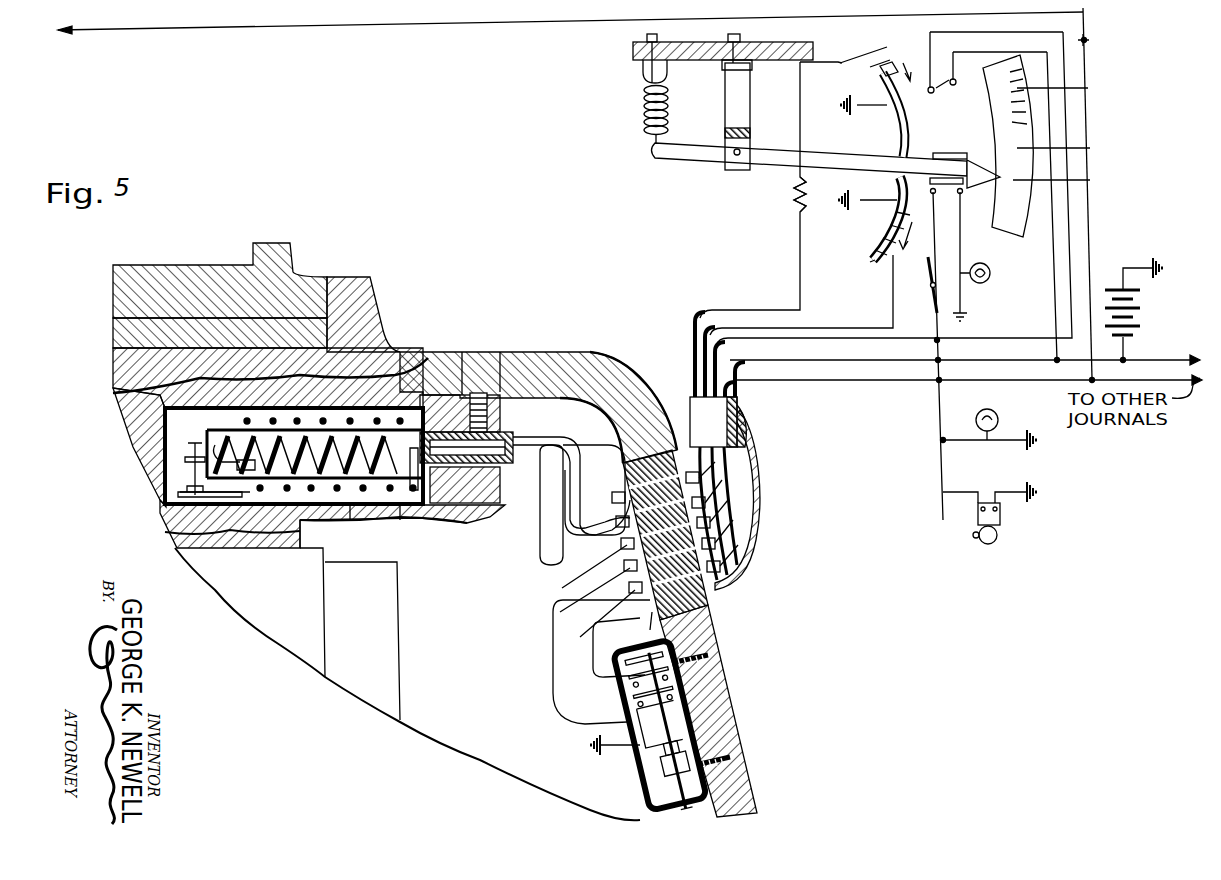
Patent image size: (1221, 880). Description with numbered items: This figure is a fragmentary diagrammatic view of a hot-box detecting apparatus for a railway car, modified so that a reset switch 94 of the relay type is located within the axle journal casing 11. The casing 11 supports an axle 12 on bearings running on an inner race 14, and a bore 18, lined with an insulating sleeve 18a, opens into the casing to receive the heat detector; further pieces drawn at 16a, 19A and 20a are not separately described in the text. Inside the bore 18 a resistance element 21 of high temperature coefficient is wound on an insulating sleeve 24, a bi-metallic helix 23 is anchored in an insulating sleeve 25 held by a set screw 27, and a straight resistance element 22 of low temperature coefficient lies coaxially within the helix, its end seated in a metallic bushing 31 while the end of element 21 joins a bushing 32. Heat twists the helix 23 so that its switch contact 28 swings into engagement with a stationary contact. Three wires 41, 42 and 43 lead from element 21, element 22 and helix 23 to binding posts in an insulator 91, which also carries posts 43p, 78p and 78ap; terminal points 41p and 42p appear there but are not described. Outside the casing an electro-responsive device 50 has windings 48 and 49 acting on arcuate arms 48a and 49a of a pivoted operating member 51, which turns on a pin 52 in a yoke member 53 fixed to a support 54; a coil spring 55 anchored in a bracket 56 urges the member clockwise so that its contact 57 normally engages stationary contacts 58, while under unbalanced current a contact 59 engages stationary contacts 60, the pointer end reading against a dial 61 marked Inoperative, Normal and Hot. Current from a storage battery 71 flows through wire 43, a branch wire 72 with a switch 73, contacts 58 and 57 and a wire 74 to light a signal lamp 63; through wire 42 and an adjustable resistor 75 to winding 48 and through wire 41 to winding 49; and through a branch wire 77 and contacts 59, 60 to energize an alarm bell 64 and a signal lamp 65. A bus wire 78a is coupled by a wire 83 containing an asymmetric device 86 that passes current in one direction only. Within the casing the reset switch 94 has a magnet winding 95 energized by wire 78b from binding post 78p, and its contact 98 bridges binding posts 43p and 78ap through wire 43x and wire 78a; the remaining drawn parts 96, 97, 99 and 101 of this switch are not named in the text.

The axle journal casing 11 is at (431, 352).
The axle 12 is at (383, 637).
The inner race 14 is at (300, 532).
The housing arch 16a is at (633, 373).
The bore 18 is at (143, 483).
The insulating sleeve 18a is at (400, 510).
The bushing 19A is at (473, 510).
The plug 20a is at (500, 402).
The resistance element 21 is at (203, 418).
The resistance element 22 is at (306, 454).
The bi-metallic helix 23 is at (314, 454).
The insulating sleeve 24 is at (349, 520).
The insulating sleeve 25 is at (513, 423).
The set screw 27 is at (497, 365).
The switch contact 28 is at (237, 463).
The metallic bushing 31 is at (189, 466).
The bushing 32 is at (207, 479).
The wire 41 is at (540, 515).
The terminal 41p is at (616, 508).
The wire 42 is at (578, 464).
The terminal 42p is at (618, 490).
The wire 43 is at (562, 445).
The binding post 43p is at (700, 601).
The wire 43x is at (653, 612).
The electromagnetic winding 48 is at (867, 68).
The arcuate arm 48a is at (897, 122).
The electromagnetic winding 49 is at (873, 240).
The arcuate arm 49a is at (903, 193).
The electro-responsive device 50 is at (625, 160).
The operating member 51 is at (812, 153).
The pin 52 is at (750, 143).
The yoke member 53 is at (747, 107).
The stationary support 54 is at (777, 53).
The coil spring 55 is at (667, 107).
The bracket 56 is at (662, 77).
The contact 57 is at (962, 190).
The stationary spaced contacts 58 is at (946, 201).
The contact 59 is at (947, 153).
The stationary spaced contacts 60 is at (995, 74).
The indicating dial 61 is at (1017, 70).
The signal lamp 63 is at (991, 268).
The bell 64 is at (1002, 535).
The signal lamp 65 is at (993, 409).
The storage battery 71 is at (1148, 320).
The branch wire 72 is at (937, 328).
The switch device 73 is at (928, 300).
The wire 74 is at (960, 242).
The adjustable resistor 75 is at (803, 210).
The branch wire 77 is at (1057, 287).
The bus wire 78a is at (597, 648).
The binding post 78ap is at (747, 573).
The wire 78b is at (552, 681).
The binding post 78p is at (601, 587).
The wire 83 is at (1089, 233).
The asymmetric device 86 is at (1090, 40).
The insulator 91 is at (712, 618).
The reset switch 94 is at (630, 789).
The magnet winding 95 is at (627, 735).
The contact plate 96 is at (617, 682).
The block 97 is at (647, 765).
The contact 98 is at (630, 641).
The contact plate 99 is at (617, 693).
The rod end 101 is at (657, 817).